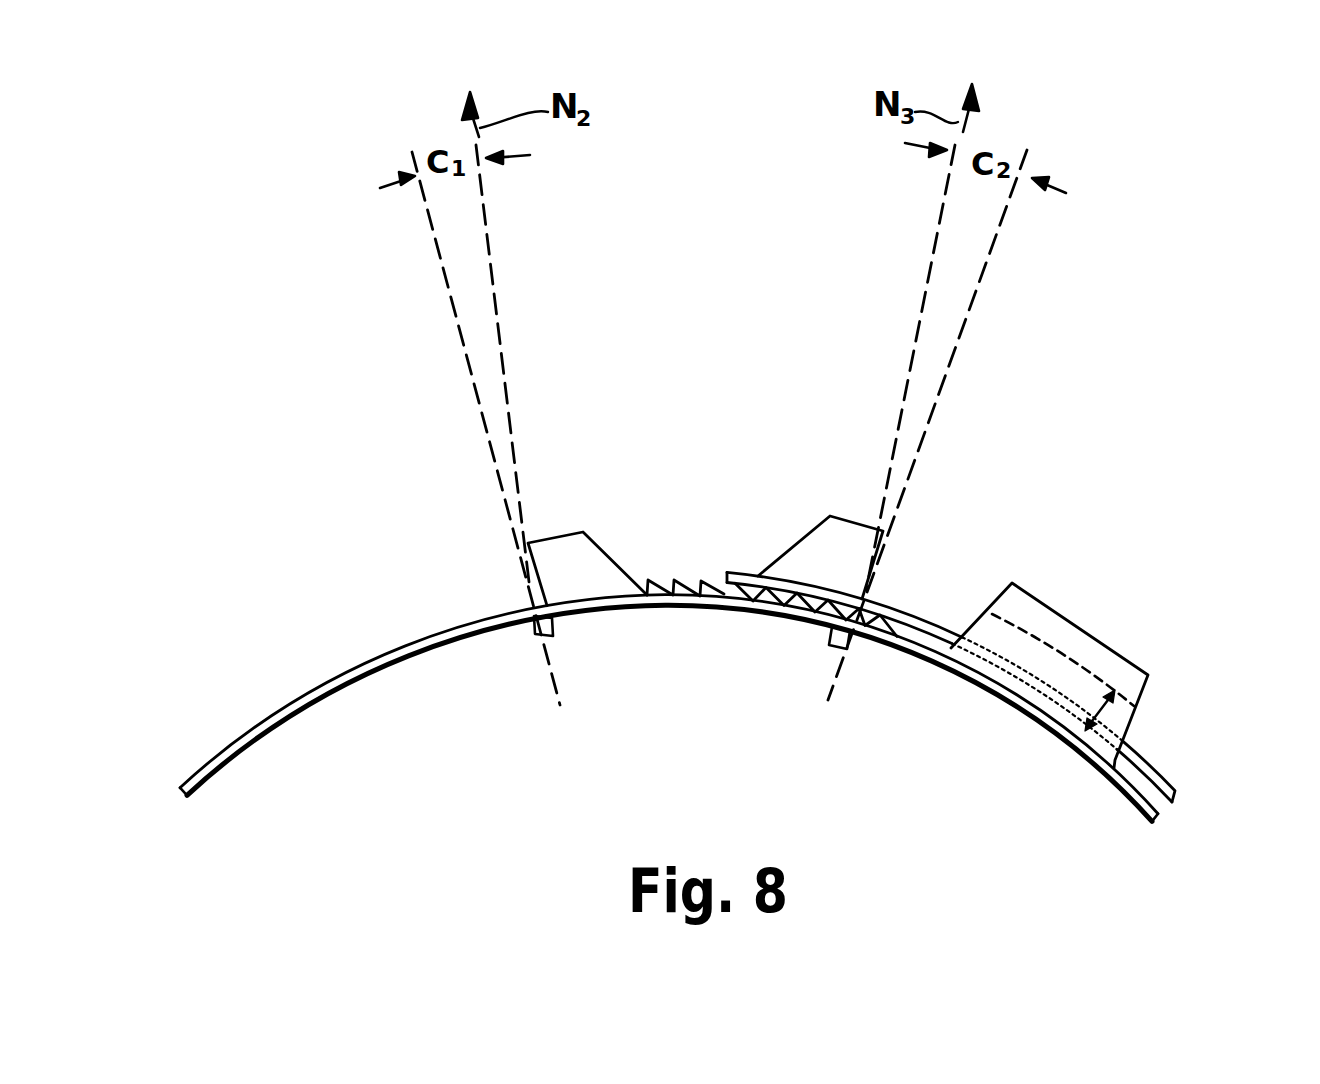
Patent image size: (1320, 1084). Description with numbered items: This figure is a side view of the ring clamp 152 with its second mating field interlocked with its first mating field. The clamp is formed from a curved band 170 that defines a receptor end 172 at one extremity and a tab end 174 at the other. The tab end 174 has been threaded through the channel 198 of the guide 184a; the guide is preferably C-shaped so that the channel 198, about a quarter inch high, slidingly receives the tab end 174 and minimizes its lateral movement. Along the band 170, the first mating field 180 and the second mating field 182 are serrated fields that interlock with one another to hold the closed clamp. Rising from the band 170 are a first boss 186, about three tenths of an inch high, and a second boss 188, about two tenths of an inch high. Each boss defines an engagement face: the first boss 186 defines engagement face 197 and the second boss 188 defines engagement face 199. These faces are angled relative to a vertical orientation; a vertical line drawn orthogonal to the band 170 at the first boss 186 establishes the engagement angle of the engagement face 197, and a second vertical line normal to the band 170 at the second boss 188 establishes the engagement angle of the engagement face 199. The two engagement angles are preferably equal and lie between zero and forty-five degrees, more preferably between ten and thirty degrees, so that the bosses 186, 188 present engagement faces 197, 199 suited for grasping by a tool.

The ring clamp 152 is at (318, 586).
The band 170 is at (226, 752).
The receptor end 172 is at (1116, 771).
The tab end 174 is at (727, 575).
The first mating field 180 is at (652, 546).
The second mating field 182 is at (770, 598).
The opposing guide 184a is at (1093, 630).
The first boss 186 is at (571, 552).
The second boss 188 is at (832, 550).
The engagement face 197 is at (533, 572).
The channel 198 is at (1138, 716).
The engagement face 199 is at (882, 545).